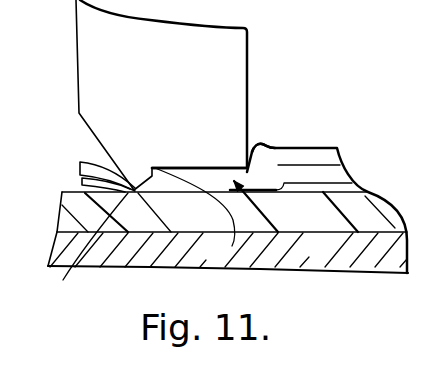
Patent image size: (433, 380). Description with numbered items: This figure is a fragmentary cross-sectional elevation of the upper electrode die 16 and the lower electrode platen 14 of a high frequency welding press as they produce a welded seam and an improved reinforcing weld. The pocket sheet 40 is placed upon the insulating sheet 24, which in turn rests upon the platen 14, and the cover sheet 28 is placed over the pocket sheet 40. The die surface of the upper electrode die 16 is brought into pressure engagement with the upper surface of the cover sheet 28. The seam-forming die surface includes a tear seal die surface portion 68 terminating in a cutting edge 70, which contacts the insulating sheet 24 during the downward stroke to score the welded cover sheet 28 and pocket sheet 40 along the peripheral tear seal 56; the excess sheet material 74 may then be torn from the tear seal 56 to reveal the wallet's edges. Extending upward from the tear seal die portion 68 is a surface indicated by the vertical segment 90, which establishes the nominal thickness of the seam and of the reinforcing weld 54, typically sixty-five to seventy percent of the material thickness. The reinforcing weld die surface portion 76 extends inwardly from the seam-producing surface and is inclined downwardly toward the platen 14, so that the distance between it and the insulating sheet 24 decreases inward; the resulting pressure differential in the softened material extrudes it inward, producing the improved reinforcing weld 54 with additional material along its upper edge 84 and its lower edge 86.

The upper electrode die 16 is at (202, 95).
The tear seal die surface portion 68 is at (140, 187).
The reinforcing weld die surface portion 76 is at (168, 168).
The excess sheet material 74 is at (78, 183).
The cover sheet 28 is at (318, 180).
The upper edge 84 is at (255, 142).
The pocket sheet 40 is at (337, 143).
The lower edge 86 is at (289, 184).
The peripheral tear seal 56 is at (173, 193).
The insulating sheet 24 is at (365, 208).
The vertical segment 90 is at (237, 236).
The platen 14 is at (231, 277).
The reinforcing weld 54 is at (314, 250).
The cutting edge 70 is at (85, 250).